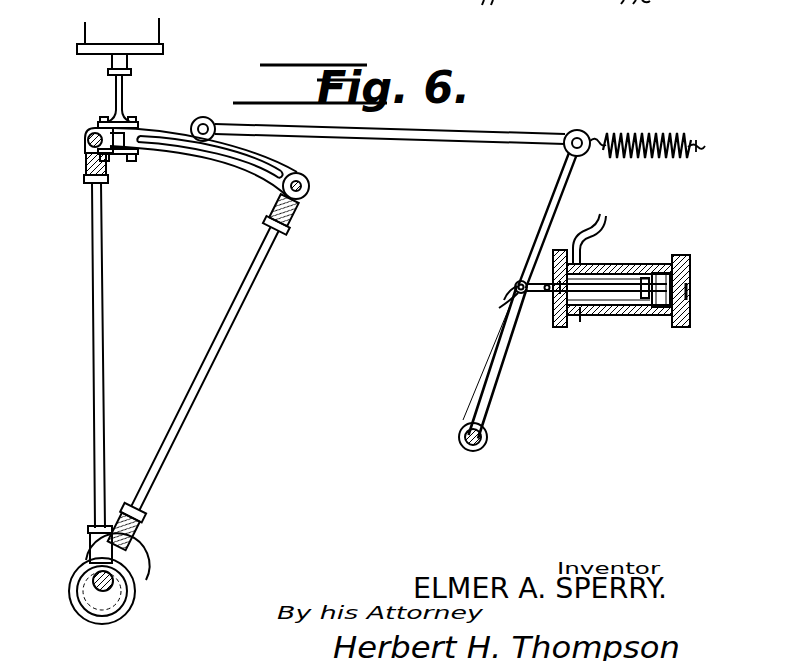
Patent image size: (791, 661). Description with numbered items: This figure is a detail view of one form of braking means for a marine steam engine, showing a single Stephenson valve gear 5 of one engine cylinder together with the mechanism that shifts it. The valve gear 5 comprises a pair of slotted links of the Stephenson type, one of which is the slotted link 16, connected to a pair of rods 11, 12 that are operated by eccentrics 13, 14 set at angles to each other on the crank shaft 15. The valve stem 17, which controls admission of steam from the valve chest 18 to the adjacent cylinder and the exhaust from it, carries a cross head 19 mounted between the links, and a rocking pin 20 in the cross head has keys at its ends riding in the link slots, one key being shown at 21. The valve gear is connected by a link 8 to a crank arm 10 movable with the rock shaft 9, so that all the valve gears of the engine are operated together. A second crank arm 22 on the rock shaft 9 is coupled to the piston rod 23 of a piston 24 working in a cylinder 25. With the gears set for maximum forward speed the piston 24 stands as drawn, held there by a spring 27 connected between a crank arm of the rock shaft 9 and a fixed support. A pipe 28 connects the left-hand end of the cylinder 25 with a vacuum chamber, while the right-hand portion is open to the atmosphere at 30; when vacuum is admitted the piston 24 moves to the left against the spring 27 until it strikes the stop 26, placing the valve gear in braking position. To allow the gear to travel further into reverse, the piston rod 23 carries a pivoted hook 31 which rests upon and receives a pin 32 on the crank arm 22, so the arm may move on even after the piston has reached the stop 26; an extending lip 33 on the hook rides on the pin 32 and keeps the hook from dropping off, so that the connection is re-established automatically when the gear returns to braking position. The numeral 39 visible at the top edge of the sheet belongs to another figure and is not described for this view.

The Stephenson valve gear 5 is at (209, 163).
The link 8 is at (458, 134).
The rock shaft 9 is at (470, 451).
The crank arm 10 is at (549, 212).
The rod 11 is at (100, 316).
The rod 12 is at (214, 353).
The eccentric 13 is at (113, 618).
The eccentric 14 is at (125, 560).
The crank shaft 15 is at (93, 585).
The slotted link 16 is at (272, 171).
The valve stem 17 is at (112, 86).
The valve chest 18 is at (162, 30).
The cross head 19 is at (138, 125).
The rocking pin 20 is at (104, 134).
The key 21 is at (115, 140).
The crank arm 22 is at (498, 350).
The piston rod 23 is at (548, 300).
The piston 24 is at (661, 315).
The cylinder 25 is at (616, 270).
The stop 26 is at (592, 330).
The spring 27 is at (647, 129).
The pipe 28 is at (598, 220).
The atmospheric opening 30 is at (690, 320).
The hook 31 is at (521, 281).
The pin 32 is at (514, 286).
The lip 33 is at (494, 307).
The reference numeral (adjacent figure) 39 is at (565, 14).